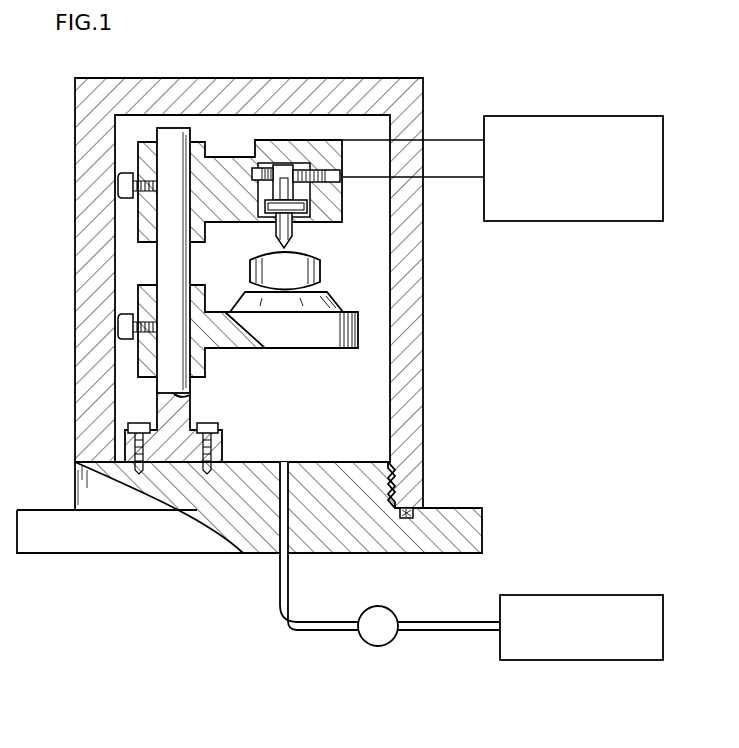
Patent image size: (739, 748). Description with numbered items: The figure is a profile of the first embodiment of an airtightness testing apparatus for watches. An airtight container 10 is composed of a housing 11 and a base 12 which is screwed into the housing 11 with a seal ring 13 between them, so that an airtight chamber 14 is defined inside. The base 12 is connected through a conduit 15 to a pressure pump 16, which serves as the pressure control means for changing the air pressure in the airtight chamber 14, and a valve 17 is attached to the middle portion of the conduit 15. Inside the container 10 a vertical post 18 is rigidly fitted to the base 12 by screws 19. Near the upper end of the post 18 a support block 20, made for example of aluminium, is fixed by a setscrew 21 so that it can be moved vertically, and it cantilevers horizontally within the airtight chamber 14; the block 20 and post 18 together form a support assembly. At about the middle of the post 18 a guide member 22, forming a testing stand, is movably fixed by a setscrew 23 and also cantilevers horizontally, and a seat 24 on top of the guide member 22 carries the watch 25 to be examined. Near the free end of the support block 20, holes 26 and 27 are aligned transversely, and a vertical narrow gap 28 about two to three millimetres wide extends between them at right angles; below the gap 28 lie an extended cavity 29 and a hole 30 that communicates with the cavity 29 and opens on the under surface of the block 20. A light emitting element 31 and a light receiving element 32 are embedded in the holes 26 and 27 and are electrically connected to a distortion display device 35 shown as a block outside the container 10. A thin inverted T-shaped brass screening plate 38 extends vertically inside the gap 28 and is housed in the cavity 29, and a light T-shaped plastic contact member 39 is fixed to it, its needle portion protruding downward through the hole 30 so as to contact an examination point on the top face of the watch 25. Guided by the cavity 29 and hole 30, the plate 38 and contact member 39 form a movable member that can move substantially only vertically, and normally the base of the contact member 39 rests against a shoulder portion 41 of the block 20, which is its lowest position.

The airtight container 10 is at (434, 332).
The housing 11 is at (403, 88).
The base 12 is at (478, 537).
The seal ring 13 is at (413, 508).
The airtight chamber 14 is at (372, 408).
The conduit 15 is at (321, 630).
The pressure pump 16 is at (572, 660).
The valve 17 is at (382, 646).
The vertical post 18 is at (166, 377).
The screws 19 is at (218, 428).
The support block 20 is at (230, 165).
The setscrew 21 is at (127, 197).
The guide member 22 is at (316, 348).
The setscrew 23 is at (125, 340).
The seat 24 is at (328, 307).
The watch 25 is at (320, 272).
The hole 26 is at (340, 176).
The hole 27 is at (253, 182).
The gap 28 is at (283, 170).
The cavity 29 is at (232, 270).
The hole 30 is at (293, 232).
The light emitting element 31 is at (333, 170).
The light receiving element 32 is at (265, 166).
The distortion display device 35 is at (573, 221).
The screening plate 38 is at (310, 202).
The contact member 39 is at (310, 209).
The shoulder portion 41 is at (276, 200).